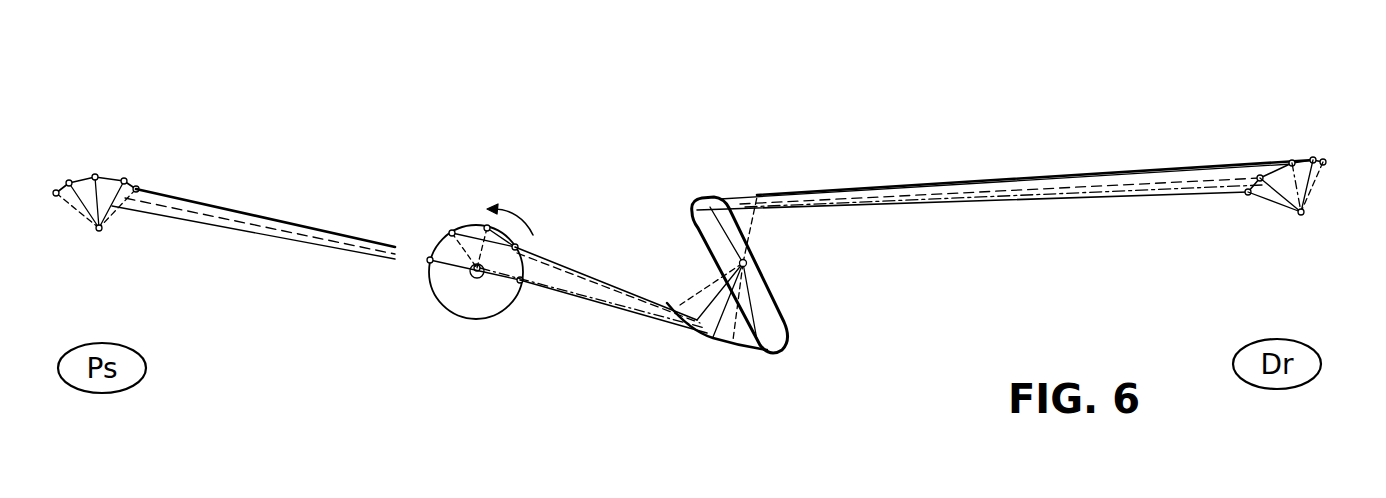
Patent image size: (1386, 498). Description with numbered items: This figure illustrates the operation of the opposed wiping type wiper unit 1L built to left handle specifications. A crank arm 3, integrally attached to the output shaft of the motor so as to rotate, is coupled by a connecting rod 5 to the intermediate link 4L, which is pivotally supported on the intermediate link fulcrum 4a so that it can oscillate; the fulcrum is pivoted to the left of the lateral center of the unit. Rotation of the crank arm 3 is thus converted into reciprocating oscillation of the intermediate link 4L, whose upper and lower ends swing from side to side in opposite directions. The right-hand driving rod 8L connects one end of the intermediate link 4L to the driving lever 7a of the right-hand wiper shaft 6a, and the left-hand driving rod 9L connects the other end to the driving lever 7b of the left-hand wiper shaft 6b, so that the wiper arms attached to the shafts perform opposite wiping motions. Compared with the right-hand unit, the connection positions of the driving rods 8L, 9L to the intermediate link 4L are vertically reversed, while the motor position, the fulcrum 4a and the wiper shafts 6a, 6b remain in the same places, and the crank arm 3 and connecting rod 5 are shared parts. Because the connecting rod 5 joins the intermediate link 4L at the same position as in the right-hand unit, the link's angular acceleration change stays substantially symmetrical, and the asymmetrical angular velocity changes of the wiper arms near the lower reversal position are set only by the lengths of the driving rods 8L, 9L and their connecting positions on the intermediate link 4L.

The opposed wiping type wiper unit in accordance with left handle specifications 1L is at (831, 89).
The crank arm 3 is at (507, 278).
The intermediate link 4L is at (792, 319).
The intermediate link fulcrum 4a is at (748, 266).
The connecting rod 5 is at (628, 309).
The right-hand wiper shaft 6a is at (99, 233).
The left-hand wiper shaft 6b is at (1304, 216).
The driving lever 7a is at (117, 207).
The driving lever 7b is at (1259, 204).
The right-hand driving rod 8L is at (357, 238).
The left-hand driving rod 9L is at (1075, 202).